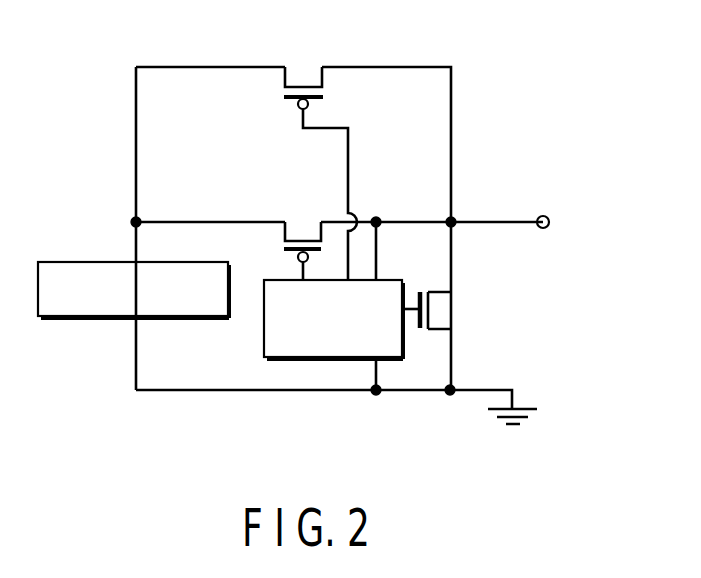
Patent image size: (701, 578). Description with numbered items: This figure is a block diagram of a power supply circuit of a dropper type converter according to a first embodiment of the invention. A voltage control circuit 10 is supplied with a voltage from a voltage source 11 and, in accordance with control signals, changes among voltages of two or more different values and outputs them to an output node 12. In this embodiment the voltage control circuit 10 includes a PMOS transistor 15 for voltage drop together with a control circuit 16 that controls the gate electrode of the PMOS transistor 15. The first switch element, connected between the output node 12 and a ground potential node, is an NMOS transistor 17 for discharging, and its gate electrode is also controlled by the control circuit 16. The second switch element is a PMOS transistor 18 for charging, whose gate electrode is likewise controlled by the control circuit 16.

The voltage control circuit 10 is at (377, 400).
The voltage source 11 is at (68, 262).
The output node 12 is at (549, 222).
The PMOS transistor 15 is at (302, 228).
The control circuit 16 is at (264, 301).
The NMOS transistor 17 is at (448, 311).
The PMOS transistor 18 is at (302, 70).